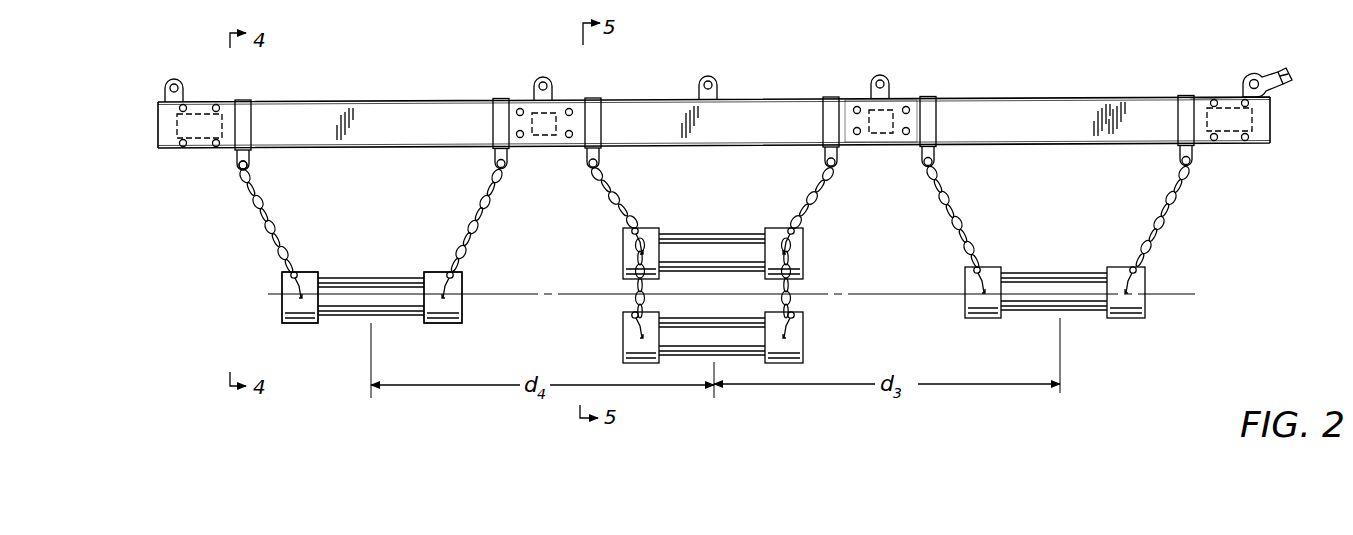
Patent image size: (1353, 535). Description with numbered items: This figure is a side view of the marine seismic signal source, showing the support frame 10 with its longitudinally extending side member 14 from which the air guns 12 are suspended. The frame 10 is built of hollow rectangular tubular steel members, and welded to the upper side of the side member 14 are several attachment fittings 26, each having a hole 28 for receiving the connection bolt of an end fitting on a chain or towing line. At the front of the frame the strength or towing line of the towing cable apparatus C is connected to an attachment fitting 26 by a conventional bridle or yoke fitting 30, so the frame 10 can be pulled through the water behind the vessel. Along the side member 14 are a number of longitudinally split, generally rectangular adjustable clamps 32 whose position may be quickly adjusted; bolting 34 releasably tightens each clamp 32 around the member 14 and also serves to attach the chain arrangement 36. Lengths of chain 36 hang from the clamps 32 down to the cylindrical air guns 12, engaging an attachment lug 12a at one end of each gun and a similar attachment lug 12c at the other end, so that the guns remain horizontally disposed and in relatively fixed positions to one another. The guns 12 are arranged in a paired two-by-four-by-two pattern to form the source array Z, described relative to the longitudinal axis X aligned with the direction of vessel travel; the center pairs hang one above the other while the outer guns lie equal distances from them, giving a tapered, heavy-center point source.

The support frame 10 is at (1067, 76).
The air gun 12 is at (370, 290).
The attachment lug 12a is at (297, 299).
The attachment lug 12c is at (462, 284).
The side member 14 is at (1130, 105).
The attachment fitting 26 is at (708, 76).
The hole 28 is at (872, 83).
The yoke fitting 30 is at (1262, 72).
The adjustable clamp 32 is at (246, 106).
The bolting 34 is at (238, 171).
The chain arrangement 36 is at (268, 213).
The towing cable apparatus C is at (1283, 70).
The longitudinal axis X is at (728, 293).
The air gun source array Z is at (1222, 229).